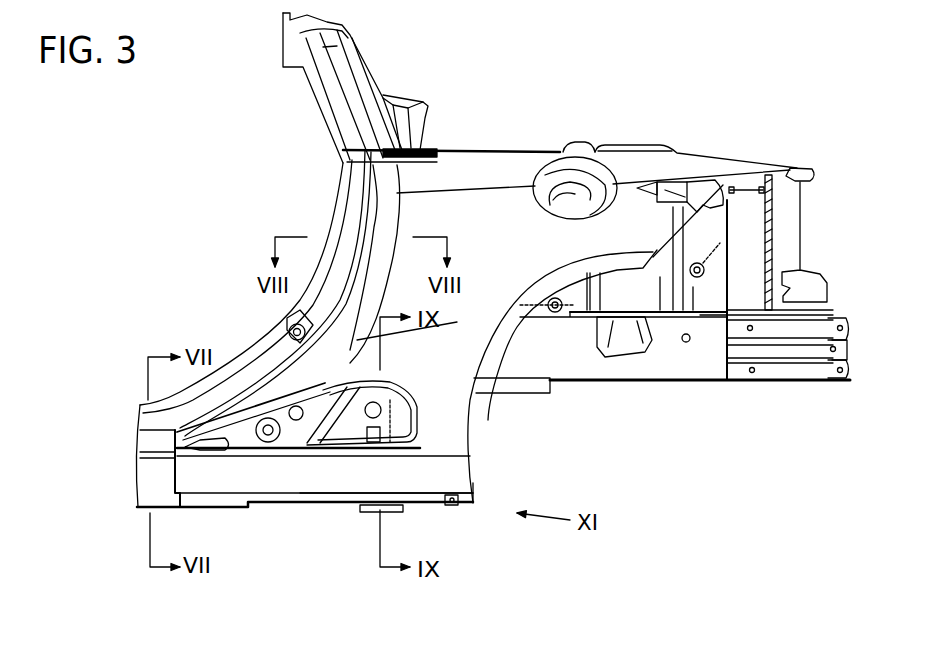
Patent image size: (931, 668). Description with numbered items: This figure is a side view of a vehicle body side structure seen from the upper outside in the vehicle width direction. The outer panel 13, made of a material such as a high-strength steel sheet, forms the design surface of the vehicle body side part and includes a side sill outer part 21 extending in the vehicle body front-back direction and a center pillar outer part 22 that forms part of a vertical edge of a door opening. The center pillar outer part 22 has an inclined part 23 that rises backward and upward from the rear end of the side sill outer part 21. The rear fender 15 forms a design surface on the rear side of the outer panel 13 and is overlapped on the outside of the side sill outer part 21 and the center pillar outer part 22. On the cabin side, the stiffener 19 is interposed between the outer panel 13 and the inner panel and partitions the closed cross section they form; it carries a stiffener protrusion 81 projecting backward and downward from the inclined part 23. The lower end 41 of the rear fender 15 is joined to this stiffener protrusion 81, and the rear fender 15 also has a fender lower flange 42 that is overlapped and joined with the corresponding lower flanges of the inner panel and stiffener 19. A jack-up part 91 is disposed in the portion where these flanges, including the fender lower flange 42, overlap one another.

The outer panel 13 is at (237, 353).
The rear fender 15 is at (457, 365).
The stiffener 19 is at (402, 415).
The side sill outer part 21 is at (138, 452).
The center pillar outer part 22 is at (280, 320).
The inclined part 23 is at (265, 330).
The lower end 41 is at (335, 503).
The fender lower flange 42 is at (443, 505).
The stiffener protrusion 81 is at (420, 428).
The jack-up part 91 is at (378, 513).